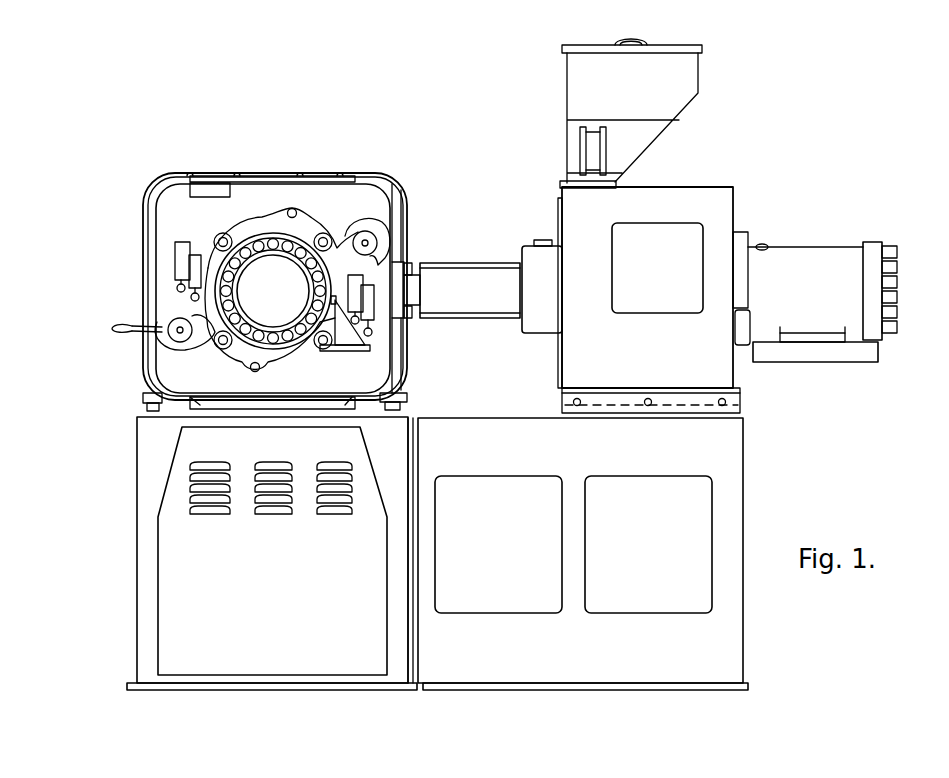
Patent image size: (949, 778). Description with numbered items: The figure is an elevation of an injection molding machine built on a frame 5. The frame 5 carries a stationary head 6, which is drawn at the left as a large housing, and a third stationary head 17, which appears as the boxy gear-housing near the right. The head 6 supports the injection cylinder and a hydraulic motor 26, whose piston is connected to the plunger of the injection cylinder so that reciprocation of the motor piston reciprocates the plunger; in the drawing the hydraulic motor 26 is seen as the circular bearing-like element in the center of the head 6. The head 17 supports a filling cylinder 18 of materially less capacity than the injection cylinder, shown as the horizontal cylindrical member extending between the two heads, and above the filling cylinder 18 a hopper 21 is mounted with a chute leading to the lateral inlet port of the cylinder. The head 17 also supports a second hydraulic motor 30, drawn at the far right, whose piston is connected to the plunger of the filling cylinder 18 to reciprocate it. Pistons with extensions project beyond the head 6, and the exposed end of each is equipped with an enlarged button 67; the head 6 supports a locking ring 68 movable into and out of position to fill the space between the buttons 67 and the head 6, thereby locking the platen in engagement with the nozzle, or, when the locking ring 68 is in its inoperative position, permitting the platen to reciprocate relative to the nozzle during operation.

The frame 5 is at (135, 430).
The stationary head 6 is at (153, 258).
The third stationary head 17 is at (723, 195).
The filling cylinder 18 is at (457, 272).
The hopper 21 is at (670, 110).
The hydraulic motor 26 is at (276, 318).
The hydraulic motor 30 is at (812, 250).
The enlarged button 67 is at (180, 330).
The locking ring 68 is at (208, 264).